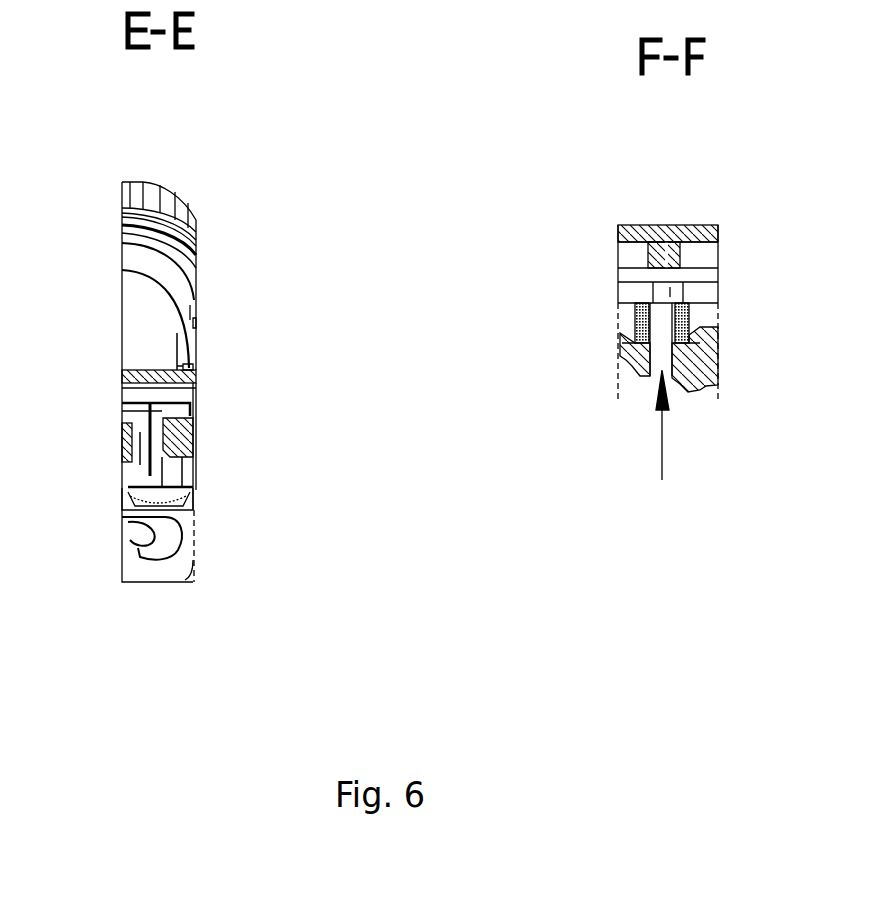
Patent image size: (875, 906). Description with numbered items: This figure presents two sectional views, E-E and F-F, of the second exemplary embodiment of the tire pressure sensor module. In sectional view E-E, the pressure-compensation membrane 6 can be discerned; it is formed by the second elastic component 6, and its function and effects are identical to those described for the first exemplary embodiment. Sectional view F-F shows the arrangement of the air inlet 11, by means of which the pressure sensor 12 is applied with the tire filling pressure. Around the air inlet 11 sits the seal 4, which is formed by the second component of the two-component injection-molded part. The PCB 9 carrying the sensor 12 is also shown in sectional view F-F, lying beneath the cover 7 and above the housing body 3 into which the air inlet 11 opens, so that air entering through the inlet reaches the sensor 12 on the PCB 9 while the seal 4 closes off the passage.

The housing body 3 is at (716, 388).
The seal 4 is at (717, 328).
The pressure-compensation membrane 6 is at (193, 502).
The cover 7 is at (710, 228).
The PCB 9 is at (678, 272).
The air inlet 11 is at (666, 451).
The pressure sensor 12 is at (672, 290).